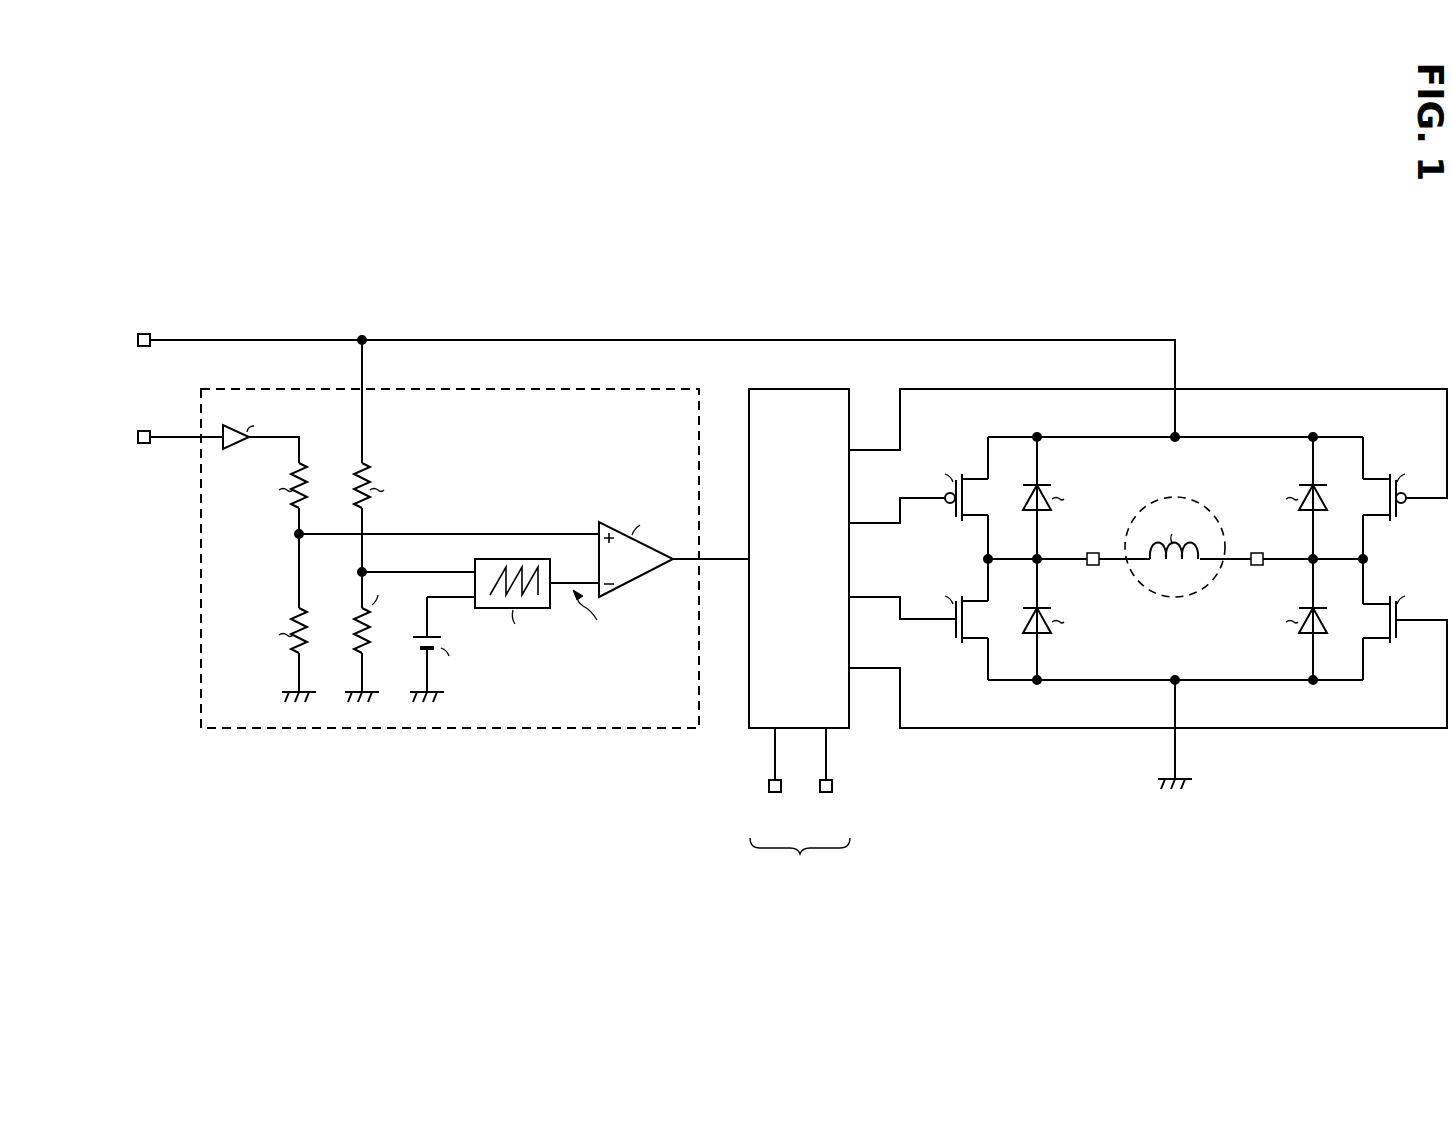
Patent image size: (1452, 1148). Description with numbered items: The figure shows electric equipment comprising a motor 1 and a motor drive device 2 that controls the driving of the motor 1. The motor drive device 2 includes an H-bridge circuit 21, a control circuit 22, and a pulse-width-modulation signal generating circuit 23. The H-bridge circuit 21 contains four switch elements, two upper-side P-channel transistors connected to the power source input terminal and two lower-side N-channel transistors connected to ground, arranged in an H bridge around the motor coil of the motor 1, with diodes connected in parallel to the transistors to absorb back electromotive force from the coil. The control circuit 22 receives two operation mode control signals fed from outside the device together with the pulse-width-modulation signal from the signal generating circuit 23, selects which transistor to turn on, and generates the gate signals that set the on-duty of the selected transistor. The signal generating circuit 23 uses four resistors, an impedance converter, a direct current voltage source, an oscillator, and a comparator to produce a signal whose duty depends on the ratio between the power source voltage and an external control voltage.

The motor 1 is at (1176, 598).
The motor drive device 2 is at (1301, 312).
The H-bridge circuit 21 is at (935, 818).
The control circuit 22 is at (793, 389).
The PWM signal generating circuit 23 is at (525, 389).